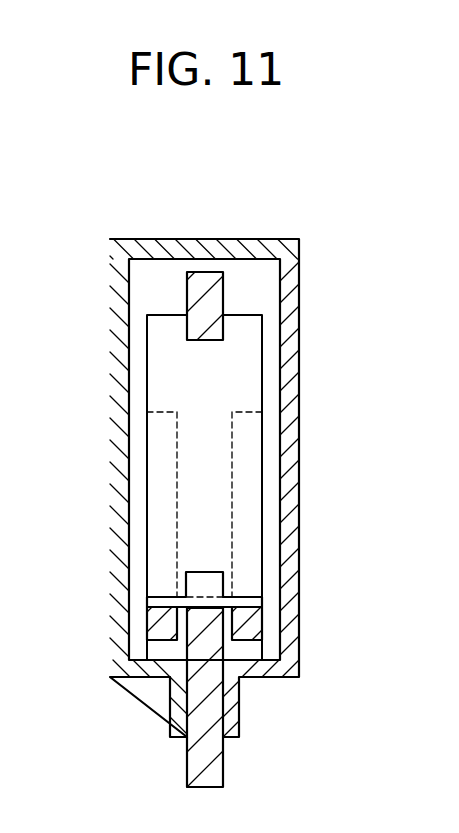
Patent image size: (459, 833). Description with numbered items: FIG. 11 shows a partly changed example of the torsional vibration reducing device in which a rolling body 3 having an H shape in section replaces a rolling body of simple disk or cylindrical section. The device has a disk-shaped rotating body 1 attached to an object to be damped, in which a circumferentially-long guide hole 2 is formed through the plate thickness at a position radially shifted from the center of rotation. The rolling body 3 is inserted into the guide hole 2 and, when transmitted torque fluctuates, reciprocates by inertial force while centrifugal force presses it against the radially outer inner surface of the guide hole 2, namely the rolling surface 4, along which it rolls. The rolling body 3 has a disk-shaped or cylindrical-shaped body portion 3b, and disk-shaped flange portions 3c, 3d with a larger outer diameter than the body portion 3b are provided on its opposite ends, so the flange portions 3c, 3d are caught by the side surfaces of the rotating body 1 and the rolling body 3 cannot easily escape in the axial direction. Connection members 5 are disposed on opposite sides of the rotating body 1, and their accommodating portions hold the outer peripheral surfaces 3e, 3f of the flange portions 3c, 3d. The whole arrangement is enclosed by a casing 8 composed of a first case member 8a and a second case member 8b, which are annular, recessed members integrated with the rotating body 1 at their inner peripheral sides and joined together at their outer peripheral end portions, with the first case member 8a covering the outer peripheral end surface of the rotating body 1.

The rotating body 1 is at (215, 772).
The guide hole 2 is at (208, 602).
The rolling body 3 is at (215, 470).
The body portion 3b is at (207, 460).
The flange portion 3c is at (170, 490).
The flange portion 3d is at (248, 512).
The outer peripheral surface 3e is at (167, 318).
The outer peripheral surface 3f is at (243, 318).
The rolling surface 4 is at (207, 340).
The connection member 5 is at (253, 630).
The casing 8 is at (251, 469).
The first case member 8a is at (230, 247).
The second case member 8b is at (292, 262).